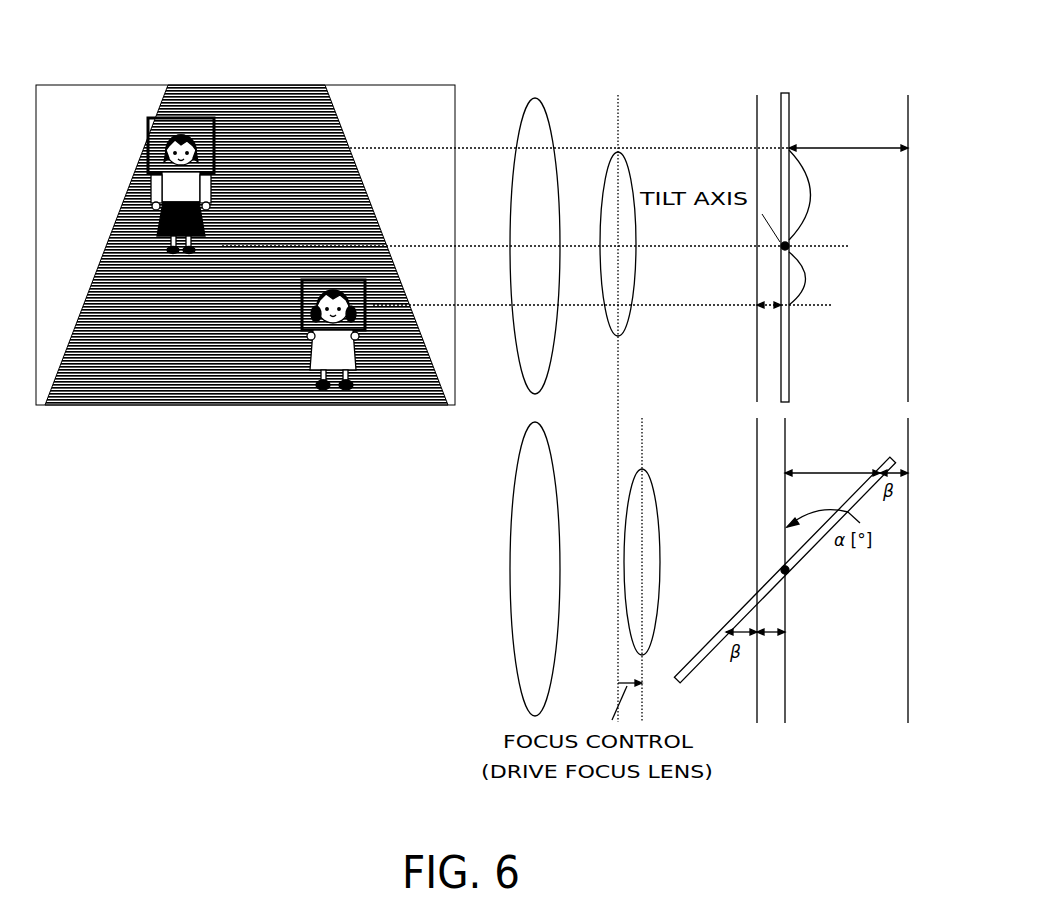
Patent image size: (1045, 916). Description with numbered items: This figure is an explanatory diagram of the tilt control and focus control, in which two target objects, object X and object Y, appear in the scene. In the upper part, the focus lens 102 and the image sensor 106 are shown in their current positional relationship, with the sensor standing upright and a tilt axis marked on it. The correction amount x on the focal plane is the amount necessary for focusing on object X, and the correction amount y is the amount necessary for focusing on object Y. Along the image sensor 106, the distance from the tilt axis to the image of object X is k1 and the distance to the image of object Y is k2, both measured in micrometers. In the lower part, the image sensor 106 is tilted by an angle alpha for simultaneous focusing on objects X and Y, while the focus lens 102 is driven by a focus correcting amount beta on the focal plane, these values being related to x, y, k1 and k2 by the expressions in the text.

The focus lens 102 is at (618, 150).
The image sensor 106 is at (788, 120).
The object X is at (191, 118).
The object Y is at (316, 392).
The correction amount for object X x is at (846, 301).
The correction amount for object Y y is at (771, 480).
The distance k1 is at (816, 195).
The distance k2 is at (816, 278).